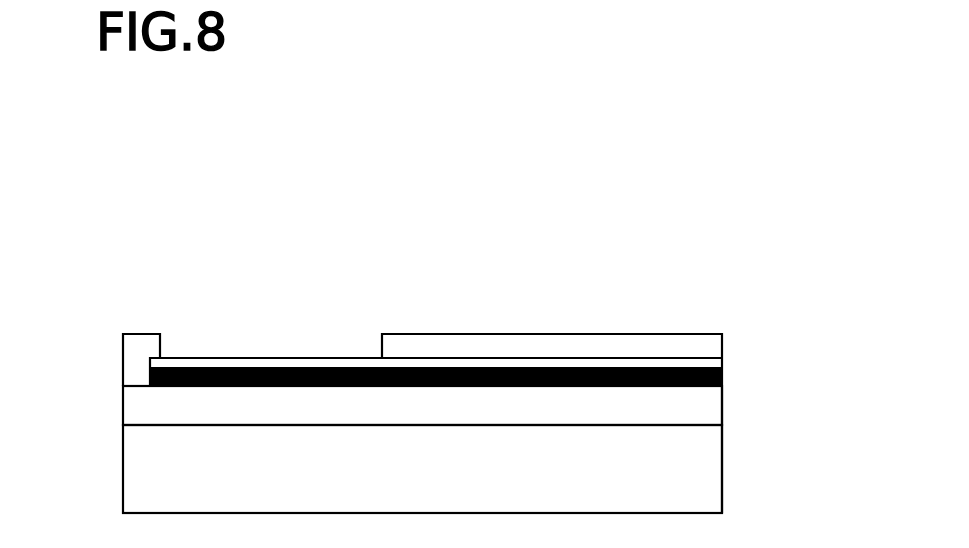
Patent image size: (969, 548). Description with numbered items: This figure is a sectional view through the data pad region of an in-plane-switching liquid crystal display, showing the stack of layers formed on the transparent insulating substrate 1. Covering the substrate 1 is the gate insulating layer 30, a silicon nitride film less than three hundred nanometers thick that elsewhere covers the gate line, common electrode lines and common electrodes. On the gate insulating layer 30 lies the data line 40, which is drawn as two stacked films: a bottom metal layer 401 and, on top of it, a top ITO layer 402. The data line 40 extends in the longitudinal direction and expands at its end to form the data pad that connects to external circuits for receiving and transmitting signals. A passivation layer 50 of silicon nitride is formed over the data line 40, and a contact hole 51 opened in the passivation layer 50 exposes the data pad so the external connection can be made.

The transparent insulating substrate 1 is at (705, 458).
The gate insulating layer 30 is at (705, 412).
The data line 40 is at (522, 358).
The bottom metal layer 401 is at (720, 375).
The top ITO layer 402 is at (705, 363).
The passivation layer 50 is at (138, 343).
The contact hole 51 is at (357, 332).